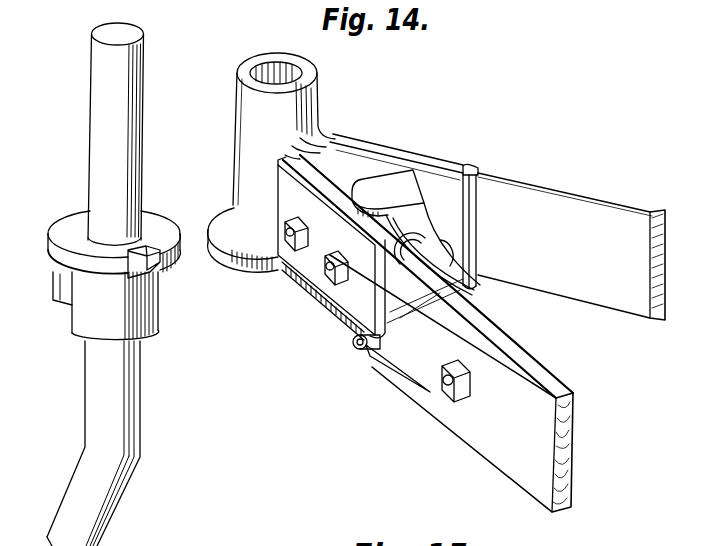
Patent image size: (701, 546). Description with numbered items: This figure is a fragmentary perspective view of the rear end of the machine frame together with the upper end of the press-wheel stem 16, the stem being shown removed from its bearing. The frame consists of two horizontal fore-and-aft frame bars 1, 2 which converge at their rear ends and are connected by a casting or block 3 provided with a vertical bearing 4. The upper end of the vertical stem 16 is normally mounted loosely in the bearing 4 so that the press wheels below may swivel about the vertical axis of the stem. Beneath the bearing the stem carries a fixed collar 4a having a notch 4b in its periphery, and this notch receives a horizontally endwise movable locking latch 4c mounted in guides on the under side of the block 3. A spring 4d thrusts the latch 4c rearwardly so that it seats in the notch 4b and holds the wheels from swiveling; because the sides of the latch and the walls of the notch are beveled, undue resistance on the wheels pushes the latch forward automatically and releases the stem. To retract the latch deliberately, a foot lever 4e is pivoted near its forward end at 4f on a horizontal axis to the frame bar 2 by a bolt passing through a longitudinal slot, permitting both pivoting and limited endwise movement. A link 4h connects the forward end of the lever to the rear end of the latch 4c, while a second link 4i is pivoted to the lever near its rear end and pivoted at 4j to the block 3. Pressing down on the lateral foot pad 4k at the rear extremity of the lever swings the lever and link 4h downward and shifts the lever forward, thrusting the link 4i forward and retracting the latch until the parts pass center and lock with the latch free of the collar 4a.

The frame bar 1 is at (607, 283).
The frame bar 2 is at (428, 333).
The casting or block 3 is at (401, 160).
The vertical bearing 4 is at (250, 130).
The collar 4a is at (168, 242).
The notch 4b is at (150, 272).
The locking latch 4c is at (280, 268).
The spring 4d is at (345, 312).
The foot lever 4e is at (468, 304).
The pivot 4f is at (446, 378).
The link 4h is at (400, 372).
The second link 4i is at (445, 255).
The pivot 4j is at (330, 278).
The foot pad 4k is at (408, 194).
The vertical stem 16 is at (98, 161).